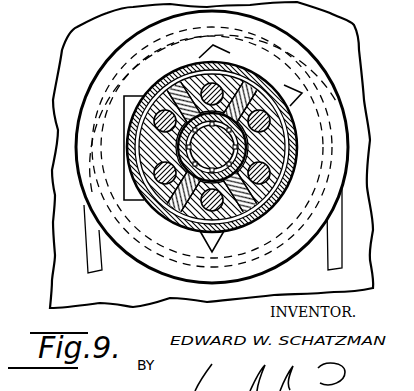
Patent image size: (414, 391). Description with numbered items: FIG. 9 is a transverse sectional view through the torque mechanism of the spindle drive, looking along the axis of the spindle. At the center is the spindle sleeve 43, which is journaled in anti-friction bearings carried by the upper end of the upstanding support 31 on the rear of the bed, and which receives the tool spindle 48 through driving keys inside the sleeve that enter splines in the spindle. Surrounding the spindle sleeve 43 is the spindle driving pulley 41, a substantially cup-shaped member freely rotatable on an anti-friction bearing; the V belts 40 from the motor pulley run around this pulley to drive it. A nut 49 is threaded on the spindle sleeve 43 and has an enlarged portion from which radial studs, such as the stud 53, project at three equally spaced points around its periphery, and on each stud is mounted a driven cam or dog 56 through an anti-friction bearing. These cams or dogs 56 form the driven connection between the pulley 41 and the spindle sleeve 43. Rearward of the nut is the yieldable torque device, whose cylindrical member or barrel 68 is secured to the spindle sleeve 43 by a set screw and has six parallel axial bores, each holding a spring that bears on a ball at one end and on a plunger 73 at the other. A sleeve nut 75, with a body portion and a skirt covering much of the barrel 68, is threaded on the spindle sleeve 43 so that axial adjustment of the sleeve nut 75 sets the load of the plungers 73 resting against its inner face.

The upstanding support 31 is at (348, 52).
The V belts 40 is at (342, 251).
The spindle driving pulley 41 is at (100, 78).
The spindle sleeve 43 is at (250, 143).
The tool spindle 48 is at (157, 231).
The nut 49 is at (247, 235).
The stud 53 is at (12, 11).
The driven cam or dog 56 is at (128, 93).
The cylindrical member or barrel 68 is at (250, 110).
The plunger 73 is at (263, 95).
The sleeve nut 75 is at (265, 215).